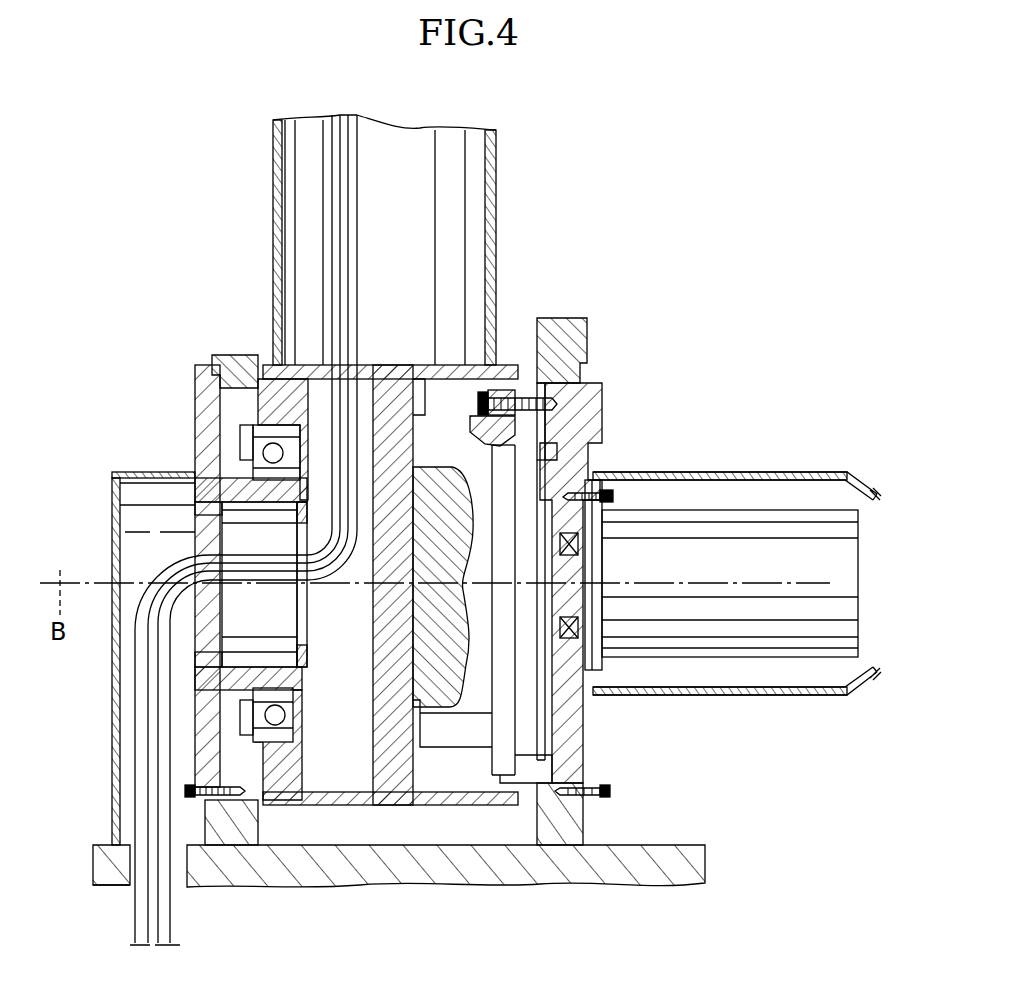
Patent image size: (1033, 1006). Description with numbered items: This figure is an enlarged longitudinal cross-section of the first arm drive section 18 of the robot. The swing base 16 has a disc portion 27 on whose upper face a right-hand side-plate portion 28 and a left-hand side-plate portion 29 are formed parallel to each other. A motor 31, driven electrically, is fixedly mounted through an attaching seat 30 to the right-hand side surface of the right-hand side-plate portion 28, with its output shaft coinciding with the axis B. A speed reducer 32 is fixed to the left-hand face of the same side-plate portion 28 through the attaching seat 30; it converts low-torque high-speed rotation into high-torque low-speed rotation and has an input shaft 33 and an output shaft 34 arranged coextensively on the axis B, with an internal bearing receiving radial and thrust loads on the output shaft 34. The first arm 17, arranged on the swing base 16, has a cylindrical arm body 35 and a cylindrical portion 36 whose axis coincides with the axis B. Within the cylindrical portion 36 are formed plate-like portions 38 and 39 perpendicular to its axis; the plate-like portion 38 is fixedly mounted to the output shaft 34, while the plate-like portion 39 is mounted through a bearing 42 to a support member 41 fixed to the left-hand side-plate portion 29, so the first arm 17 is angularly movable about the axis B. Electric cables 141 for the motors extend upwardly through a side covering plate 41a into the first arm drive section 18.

The swing base 16 is at (680, 842).
The first arm 17 is at (497, 198).
The first arm drive section 18 is at (614, 250).
The disc portion 27 is at (690, 870).
The right-hand side-plate portion 28 is at (572, 344).
The left-hand side-plate portion 29 is at (236, 356).
The attaching seat 30 is at (604, 410).
The motor 31 is at (712, 510).
The speed reducer 32 is at (500, 765).
The input shaft 33 is at (568, 600).
The output shaft 34 is at (460, 730).
The arm body 35 is at (273, 212).
The cylindrical portion 36 is at (337, 797).
The plate-like portion 38 is at (373, 620).
The plate-like portion 39 is at (290, 757).
The support member 41 is at (200, 410).
The side covering plate 41a is at (162, 474).
The bearing 42 is at (282, 456).
The electric cables 141 is at (357, 253).